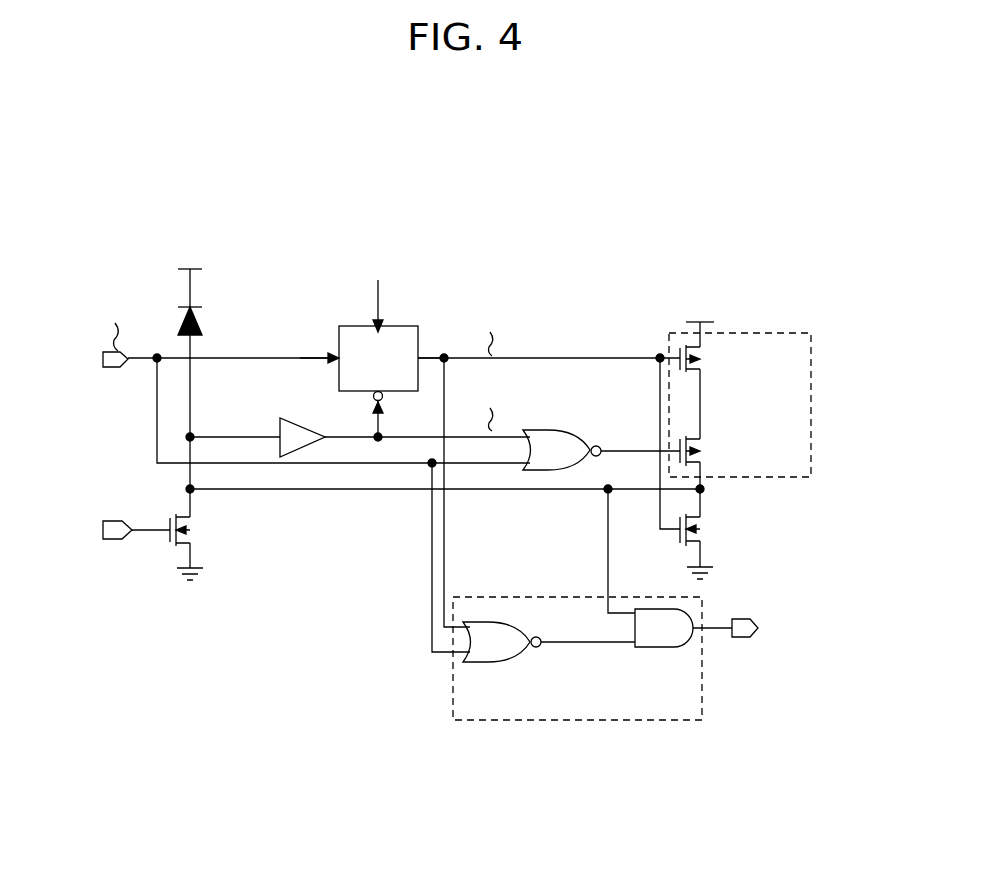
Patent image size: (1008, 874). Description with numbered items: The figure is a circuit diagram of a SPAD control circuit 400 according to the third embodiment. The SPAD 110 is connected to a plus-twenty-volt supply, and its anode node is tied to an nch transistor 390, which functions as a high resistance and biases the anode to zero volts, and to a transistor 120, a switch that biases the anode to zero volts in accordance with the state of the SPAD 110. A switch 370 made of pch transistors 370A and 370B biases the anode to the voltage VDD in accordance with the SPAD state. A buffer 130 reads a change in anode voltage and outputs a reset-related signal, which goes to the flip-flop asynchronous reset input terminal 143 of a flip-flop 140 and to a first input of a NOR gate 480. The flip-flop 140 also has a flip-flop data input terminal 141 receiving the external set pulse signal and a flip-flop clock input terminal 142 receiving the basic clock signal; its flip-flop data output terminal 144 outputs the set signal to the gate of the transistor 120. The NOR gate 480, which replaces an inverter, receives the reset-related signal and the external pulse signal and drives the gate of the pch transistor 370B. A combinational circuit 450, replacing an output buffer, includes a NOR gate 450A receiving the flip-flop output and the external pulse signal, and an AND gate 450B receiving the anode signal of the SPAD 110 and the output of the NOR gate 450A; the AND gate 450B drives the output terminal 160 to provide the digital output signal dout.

The SPAD 110 is at (200, 321).
The transistor 120 is at (704, 533).
The buffer 130 is at (297, 420).
The flip-flop 140 is at (396, 325).
The flip-flop data input terminal 141 is at (338, 357).
The flip-flop clock input terminal 142 is at (375, 325).
The flip-flop asynchronous reset input terminal 143 is at (383, 400).
The flip-flop data output terminal 144 is at (418, 357).
The output terminal 160 is at (745, 618).
The switch 370 is at (812, 362).
The pch transistor 370A is at (704, 360).
The pch transistor 370B is at (704, 452).
The nch transistor 390 is at (192, 535).
The SPAD control circuit 400 is at (806, 250).
The combinational circuit 450 is at (706, 702).
The NOR gate 450A is at (498, 664).
The AND gate 450B is at (660, 650).
The NOR gate 480 is at (552, 430).